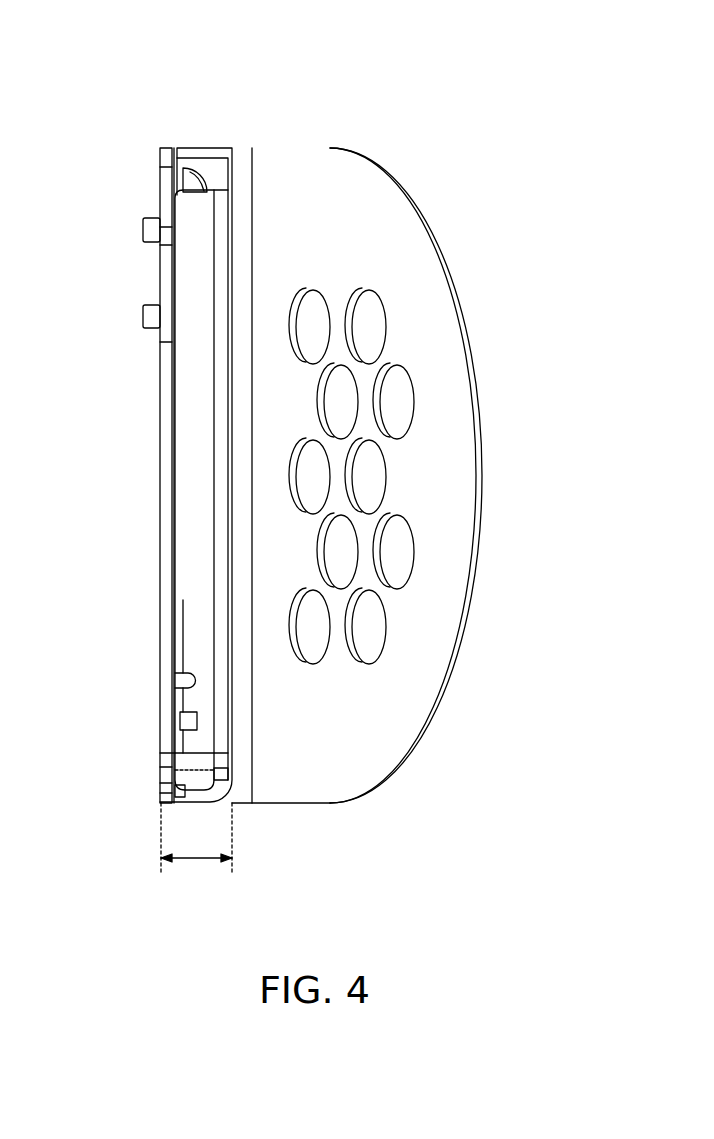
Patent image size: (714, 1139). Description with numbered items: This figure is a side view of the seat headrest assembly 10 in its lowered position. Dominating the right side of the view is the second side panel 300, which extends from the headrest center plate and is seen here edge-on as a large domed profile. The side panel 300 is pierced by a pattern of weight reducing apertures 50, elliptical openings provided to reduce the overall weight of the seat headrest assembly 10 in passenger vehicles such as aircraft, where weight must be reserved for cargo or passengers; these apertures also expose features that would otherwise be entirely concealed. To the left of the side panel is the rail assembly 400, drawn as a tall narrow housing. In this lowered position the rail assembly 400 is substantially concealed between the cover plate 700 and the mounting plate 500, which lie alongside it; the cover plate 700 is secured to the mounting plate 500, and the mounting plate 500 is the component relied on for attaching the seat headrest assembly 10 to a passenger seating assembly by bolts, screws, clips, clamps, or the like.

The seat headrest assembly 10 is at (120, 80).
The weight reducing apertures 50 is at (374, 621).
The second side panel 300 is at (410, 268).
The rail assembly 400 is at (207, 147).
The mounting plate 500 is at (167, 273).
The cover plate 700 is at (195, 363).